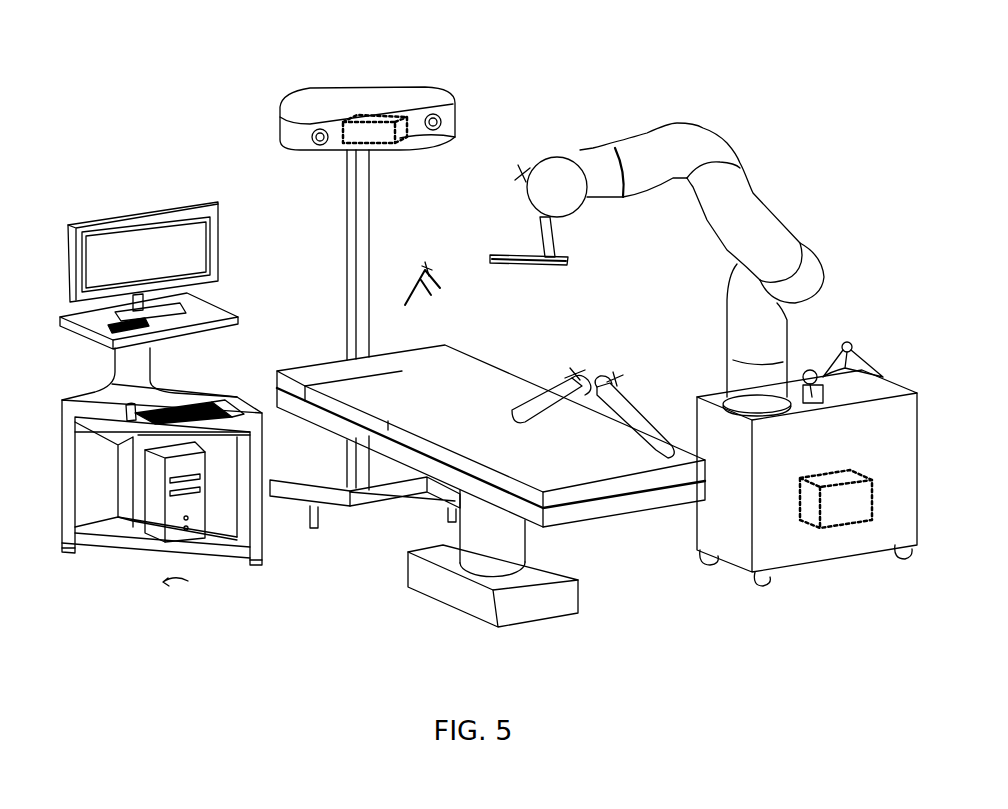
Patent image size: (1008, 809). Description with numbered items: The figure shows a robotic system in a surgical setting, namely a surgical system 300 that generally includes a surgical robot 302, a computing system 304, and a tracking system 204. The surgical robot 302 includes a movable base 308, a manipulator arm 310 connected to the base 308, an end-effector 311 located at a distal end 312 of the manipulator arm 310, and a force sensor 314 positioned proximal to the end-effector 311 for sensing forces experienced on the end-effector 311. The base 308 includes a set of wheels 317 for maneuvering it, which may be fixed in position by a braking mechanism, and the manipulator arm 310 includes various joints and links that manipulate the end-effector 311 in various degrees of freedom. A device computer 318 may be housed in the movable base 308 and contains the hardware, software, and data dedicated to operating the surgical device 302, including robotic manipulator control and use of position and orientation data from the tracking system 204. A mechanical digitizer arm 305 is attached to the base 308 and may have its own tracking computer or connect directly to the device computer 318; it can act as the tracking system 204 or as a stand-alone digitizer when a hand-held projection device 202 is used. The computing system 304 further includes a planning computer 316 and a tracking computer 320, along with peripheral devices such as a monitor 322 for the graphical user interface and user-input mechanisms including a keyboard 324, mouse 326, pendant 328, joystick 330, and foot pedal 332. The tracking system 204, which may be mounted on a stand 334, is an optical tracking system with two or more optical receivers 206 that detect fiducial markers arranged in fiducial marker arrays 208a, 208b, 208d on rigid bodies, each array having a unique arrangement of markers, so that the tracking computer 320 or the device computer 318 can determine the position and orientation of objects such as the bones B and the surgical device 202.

The surgical system 300 is at (145, 91).
The surgical robot 302 is at (830, 240).
The computing system 304 is at (102, 486).
The mechanical digitizer arm 305 is at (875, 338).
The movable base 308 is at (700, 522).
The manipulator arm 310 is at (760, 216).
The end-effector 311 is at (504, 262).
The distal end 312 is at (552, 227).
The force sensor 314 is at (540, 218).
The planning computer 316 is at (200, 535).
The wheels 317 is at (753, 582).
The device computer 318 is at (846, 545).
The tracking computer 320 is at (394, 138).
The monitor 322 is at (135, 214).
The keyboard 324 is at (178, 396).
The mouse 326 is at (226, 408).
The pendant 328 is at (110, 327).
The joystick 330 is at (130, 420).
The foot pedal 332 is at (178, 592).
The stand 334 is at (348, 270).
The tracking system 204 is at (268, 135).
The optical receivers 206 is at (433, 118).
The hand-held projection device 202 is at (430, 304).
The fiducial marker array 208a is at (427, 268).
The fiducial marker array 208b is at (570, 375).
The fiducial marker array 208d is at (522, 170).
The bones B is at (630, 420).